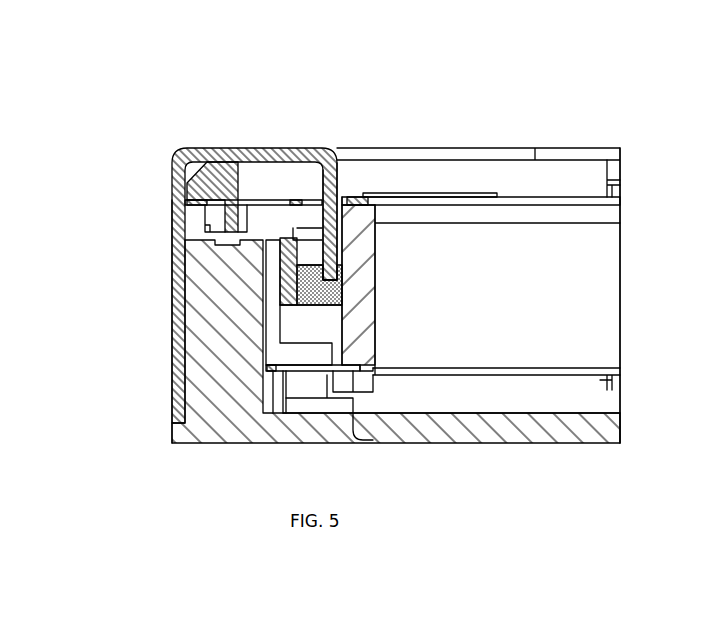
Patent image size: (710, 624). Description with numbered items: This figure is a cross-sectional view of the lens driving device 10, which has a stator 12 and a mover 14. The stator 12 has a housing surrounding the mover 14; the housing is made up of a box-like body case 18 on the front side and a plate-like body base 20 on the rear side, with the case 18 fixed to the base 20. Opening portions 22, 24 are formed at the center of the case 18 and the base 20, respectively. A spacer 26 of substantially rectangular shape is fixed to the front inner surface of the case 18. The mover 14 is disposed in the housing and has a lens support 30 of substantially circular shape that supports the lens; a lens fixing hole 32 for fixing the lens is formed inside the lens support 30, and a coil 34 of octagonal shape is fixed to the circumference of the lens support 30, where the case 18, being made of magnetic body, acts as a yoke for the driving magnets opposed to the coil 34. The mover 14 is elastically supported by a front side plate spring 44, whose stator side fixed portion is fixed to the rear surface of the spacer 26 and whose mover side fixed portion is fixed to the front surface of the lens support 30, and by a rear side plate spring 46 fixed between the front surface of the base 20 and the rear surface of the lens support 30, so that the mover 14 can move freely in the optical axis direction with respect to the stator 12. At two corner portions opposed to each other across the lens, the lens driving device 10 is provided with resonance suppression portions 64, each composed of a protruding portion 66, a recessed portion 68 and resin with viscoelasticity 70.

The lens driving device 10 is at (536, 106).
The stator 12 is at (170, 190).
The mover 14 is at (624, 312).
The case 18 is at (183, 325).
The base 20 is at (232, 432).
The opening portion 22 is at (423, 155).
The opening portion 24 is at (497, 418).
The spacer 26 is at (215, 180).
The lens support 30 is at (358, 325).
The lens fixing hole 32 is at (380, 285).
The coil 34 is at (290, 275).
The front side plate spring 44 is at (352, 199).
The rear side plate spring 46 is at (325, 305).
The resonance suppression portion 64 is at (312, 213).
The protruding portion 66 is at (331, 232).
The recessed portion 68 is at (338, 300).
The resin with viscoelasticity 70 is at (311, 306).